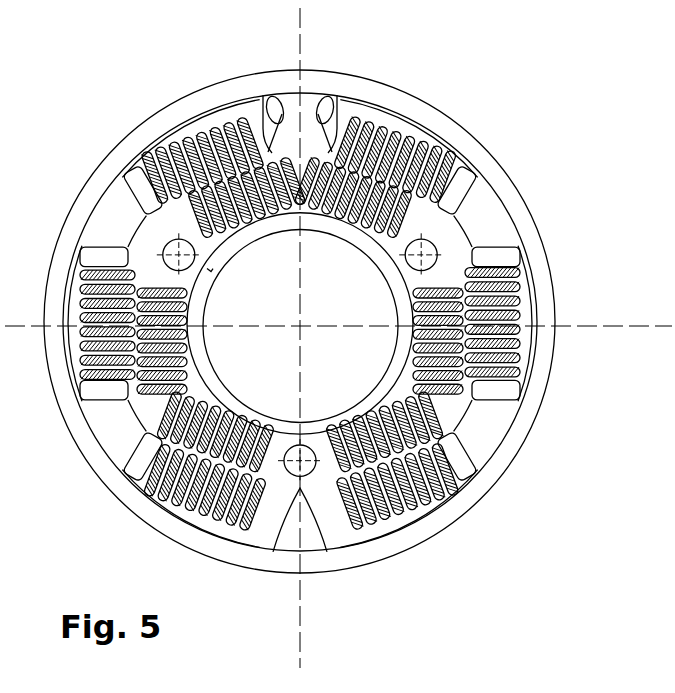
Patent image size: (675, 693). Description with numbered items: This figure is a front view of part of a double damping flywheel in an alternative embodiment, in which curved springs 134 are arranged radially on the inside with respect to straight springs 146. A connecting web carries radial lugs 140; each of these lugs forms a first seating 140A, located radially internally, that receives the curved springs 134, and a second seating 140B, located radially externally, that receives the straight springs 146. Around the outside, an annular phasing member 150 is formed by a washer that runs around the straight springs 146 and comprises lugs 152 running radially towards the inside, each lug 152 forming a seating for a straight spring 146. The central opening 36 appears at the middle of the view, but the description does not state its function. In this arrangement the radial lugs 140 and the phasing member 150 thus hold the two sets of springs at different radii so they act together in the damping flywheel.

The shaft opening 36 is at (371, 400).
The curved springs 134 is at (208, 124).
The radial lugs 140 is at (488, 229).
The first seatings 140A is at (520, 307).
The second seatings 140B is at (528, 292).
The straight springs 146 is at (410, 125).
The annular phasing member 150 is at (510, 194).
The lugs 152 is at (283, 100).